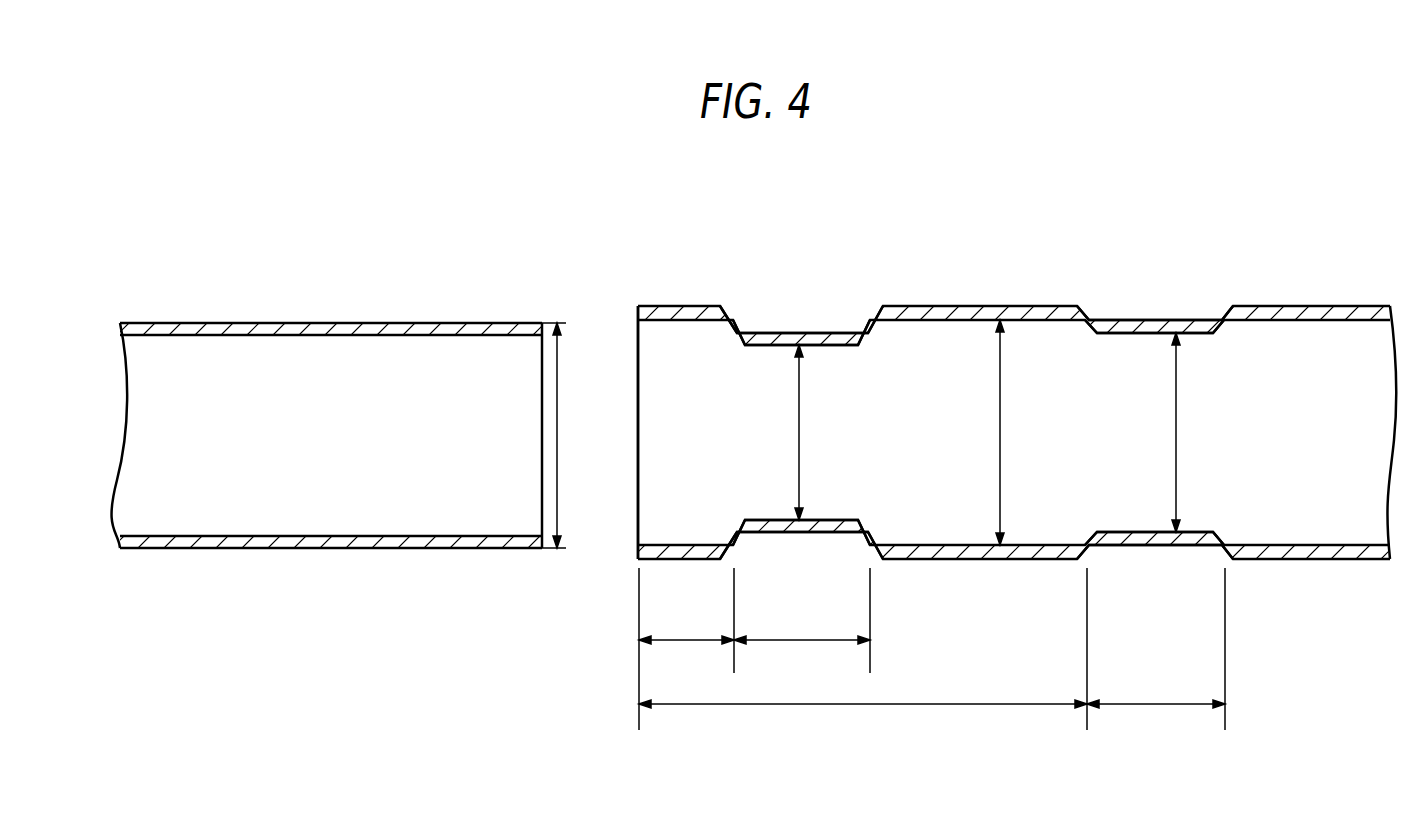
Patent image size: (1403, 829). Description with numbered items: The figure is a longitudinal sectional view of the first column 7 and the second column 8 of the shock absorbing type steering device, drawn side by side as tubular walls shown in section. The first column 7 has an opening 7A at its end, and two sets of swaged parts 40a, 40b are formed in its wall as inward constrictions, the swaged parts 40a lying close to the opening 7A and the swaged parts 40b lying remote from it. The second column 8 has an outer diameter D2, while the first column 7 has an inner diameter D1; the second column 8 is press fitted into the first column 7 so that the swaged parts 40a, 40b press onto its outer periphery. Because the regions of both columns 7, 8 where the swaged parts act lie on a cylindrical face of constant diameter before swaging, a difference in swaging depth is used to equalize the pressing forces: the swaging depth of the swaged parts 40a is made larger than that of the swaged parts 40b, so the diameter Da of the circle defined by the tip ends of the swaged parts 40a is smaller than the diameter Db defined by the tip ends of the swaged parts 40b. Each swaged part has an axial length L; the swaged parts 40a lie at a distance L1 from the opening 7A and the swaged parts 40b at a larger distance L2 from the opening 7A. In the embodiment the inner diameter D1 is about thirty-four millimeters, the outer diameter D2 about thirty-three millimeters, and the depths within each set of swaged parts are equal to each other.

The first column 7 is at (976, 306).
The opening 7A is at (636, 508).
The second column 8 is at (347, 548).
The swaged parts 40a is at (792, 333).
The swaged parts 40b is at (1160, 320).
The inner diameter D1 is at (1001, 412).
The outer diameter D2 is at (557, 400).
The diameter Da is at (800, 423).
The diameter Db is at (1177, 412).
The axial length L is at (789, 640).
The distance L1 is at (686, 640).
The distance L2 is at (954, 704).